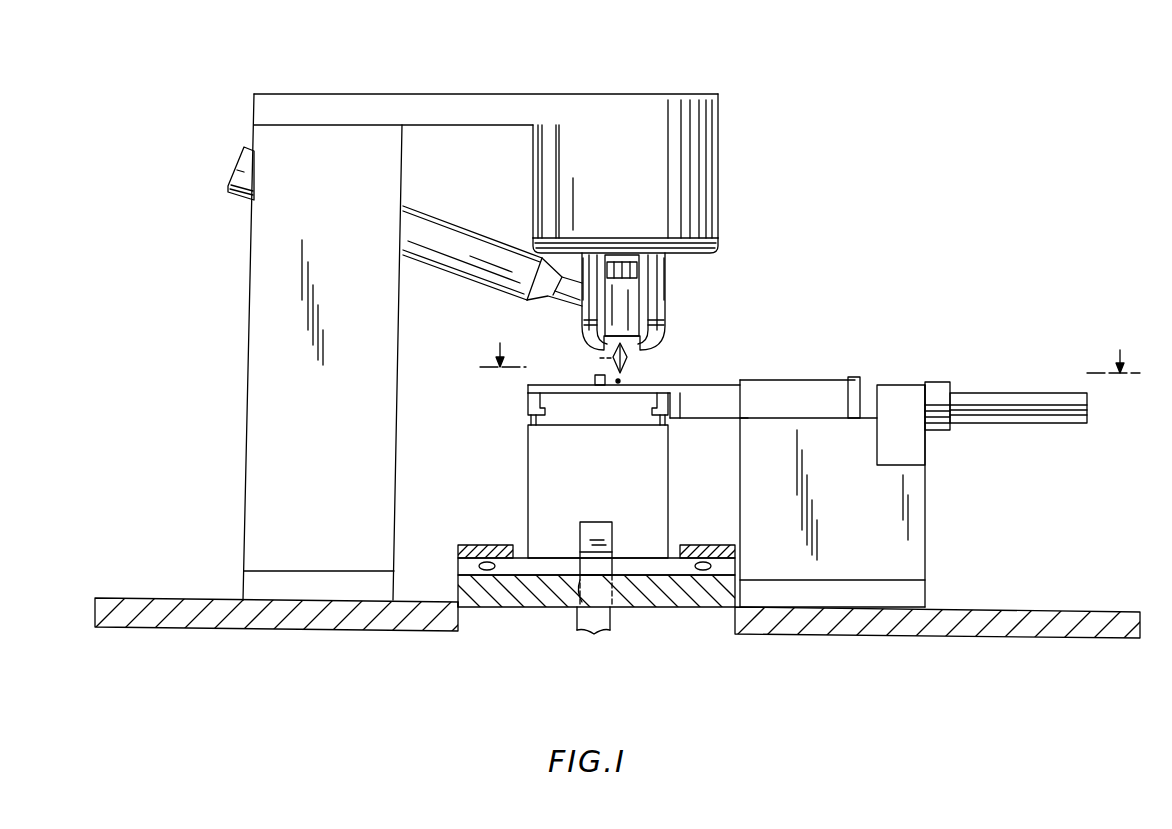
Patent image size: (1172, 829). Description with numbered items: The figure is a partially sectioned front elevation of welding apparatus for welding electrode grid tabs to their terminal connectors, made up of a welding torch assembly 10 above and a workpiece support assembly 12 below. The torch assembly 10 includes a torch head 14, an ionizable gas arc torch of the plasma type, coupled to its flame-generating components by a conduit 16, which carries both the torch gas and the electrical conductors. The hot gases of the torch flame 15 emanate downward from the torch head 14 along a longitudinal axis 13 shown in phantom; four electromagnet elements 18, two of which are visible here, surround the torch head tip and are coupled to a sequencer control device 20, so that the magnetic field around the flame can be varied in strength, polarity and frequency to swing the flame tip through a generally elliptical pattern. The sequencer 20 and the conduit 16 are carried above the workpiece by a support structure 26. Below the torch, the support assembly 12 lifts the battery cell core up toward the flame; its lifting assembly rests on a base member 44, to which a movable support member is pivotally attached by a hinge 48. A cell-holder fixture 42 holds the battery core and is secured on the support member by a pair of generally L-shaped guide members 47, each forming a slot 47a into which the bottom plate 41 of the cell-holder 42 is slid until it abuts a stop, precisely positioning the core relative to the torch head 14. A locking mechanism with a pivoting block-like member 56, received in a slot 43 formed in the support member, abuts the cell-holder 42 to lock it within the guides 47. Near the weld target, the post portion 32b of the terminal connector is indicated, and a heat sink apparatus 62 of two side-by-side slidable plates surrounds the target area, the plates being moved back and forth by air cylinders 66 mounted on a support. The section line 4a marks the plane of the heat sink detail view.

The welding torch assembly 10 is at (770, 263).
The workpiece support assembly 12 is at (462, 643).
The longitudinal axis of the torch flame 13 is at (598, 358).
The torch head 14 is at (625, 302).
The torch flame 15 is at (632, 364).
The conduit 16 is at (481, 206).
The electromagnet element 18 is at (588, 328).
The sequencer control device 20 is at (710, 174).
The support structure 26 is at (256, 94).
The post portion 32b is at (594, 380).
The bottom plate 41 is at (510, 556).
The cell-holder fixture 42 is at (548, 454).
The slot 43 is at (575, 618).
The base member 44 is at (193, 613).
The guide member 47 is at (468, 545).
The slot 47a is at (478, 566).
The hinge 48 is at (681, 597).
The block-like member 56 is at (606, 630).
The heat sink apparatus 62 is at (668, 377).
The air cylinder 66 is at (905, 385).
The section line 4a is at (810, 344).